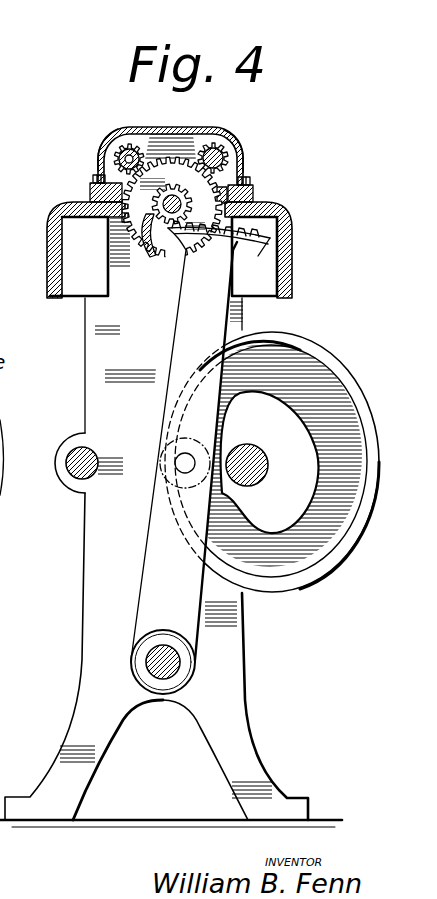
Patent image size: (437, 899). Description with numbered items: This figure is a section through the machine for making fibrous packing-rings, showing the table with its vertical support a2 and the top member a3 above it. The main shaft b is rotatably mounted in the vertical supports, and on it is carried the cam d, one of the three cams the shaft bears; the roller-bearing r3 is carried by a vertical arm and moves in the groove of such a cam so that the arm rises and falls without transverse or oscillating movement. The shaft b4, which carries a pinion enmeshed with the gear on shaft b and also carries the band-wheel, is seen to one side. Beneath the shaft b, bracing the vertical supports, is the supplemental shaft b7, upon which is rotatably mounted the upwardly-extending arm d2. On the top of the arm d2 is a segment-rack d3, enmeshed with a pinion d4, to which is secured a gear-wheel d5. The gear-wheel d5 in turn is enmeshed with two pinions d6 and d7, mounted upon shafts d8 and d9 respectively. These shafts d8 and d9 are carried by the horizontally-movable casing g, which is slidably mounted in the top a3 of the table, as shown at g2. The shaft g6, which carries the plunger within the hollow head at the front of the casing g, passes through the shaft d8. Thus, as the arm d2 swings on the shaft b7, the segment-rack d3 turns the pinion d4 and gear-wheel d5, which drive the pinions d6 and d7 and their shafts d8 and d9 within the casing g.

The vertical support a2 is at (171, 522).
The top member a3 is at (50, 247).
The slide mounting g2 is at (90, 193).
The horizontally-movable casing g is at (197, 133).
The shaft g6 is at (97, 153).
The shaft d9 is at (246, 157).
The pinion d6 is at (121, 150).
The shaft d8 is at (112, 163).
The pinion d7 is at (219, 144).
The pinion d4 is at (163, 220).
The gear-wheel d5 is at (143, 252).
The segment-rack d3 is at (236, 222).
The cam d is at (323, 553).
The shaft b is at (247, 447).
The upwardly-extending arm d2 is at (184, 444).
The roller-bearing r3 is at (199, 447).
The supplemental shaft b7 is at (160, 663).
The shaft b4 is at (90, 453).